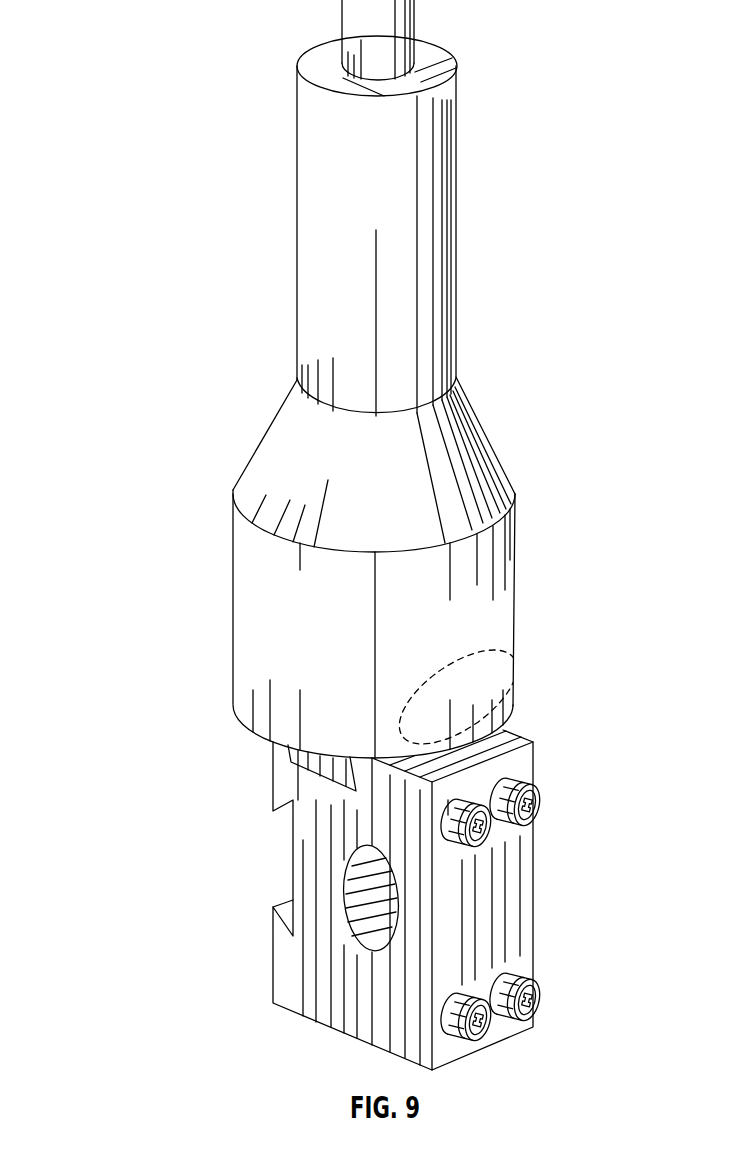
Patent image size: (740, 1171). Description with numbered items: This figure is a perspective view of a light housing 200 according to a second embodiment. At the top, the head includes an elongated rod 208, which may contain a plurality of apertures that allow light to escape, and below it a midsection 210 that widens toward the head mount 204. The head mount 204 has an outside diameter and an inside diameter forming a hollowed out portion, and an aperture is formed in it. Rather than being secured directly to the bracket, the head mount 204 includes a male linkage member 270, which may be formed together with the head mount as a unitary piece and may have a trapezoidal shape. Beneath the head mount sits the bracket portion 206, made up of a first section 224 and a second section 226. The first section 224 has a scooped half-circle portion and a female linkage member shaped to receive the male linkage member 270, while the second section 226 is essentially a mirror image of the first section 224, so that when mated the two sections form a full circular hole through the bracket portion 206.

The housing 200 is at (110, 203).
The head mount 204 is at (488, 593).
The bracket portion 206 is at (547, 873).
The rod 208 is at (441, 226).
The midsection 210 is at (458, 457).
The first section 224 is at (283, 958).
The second section 226 is at (495, 922).
The male linkage member 270 is at (314, 762).